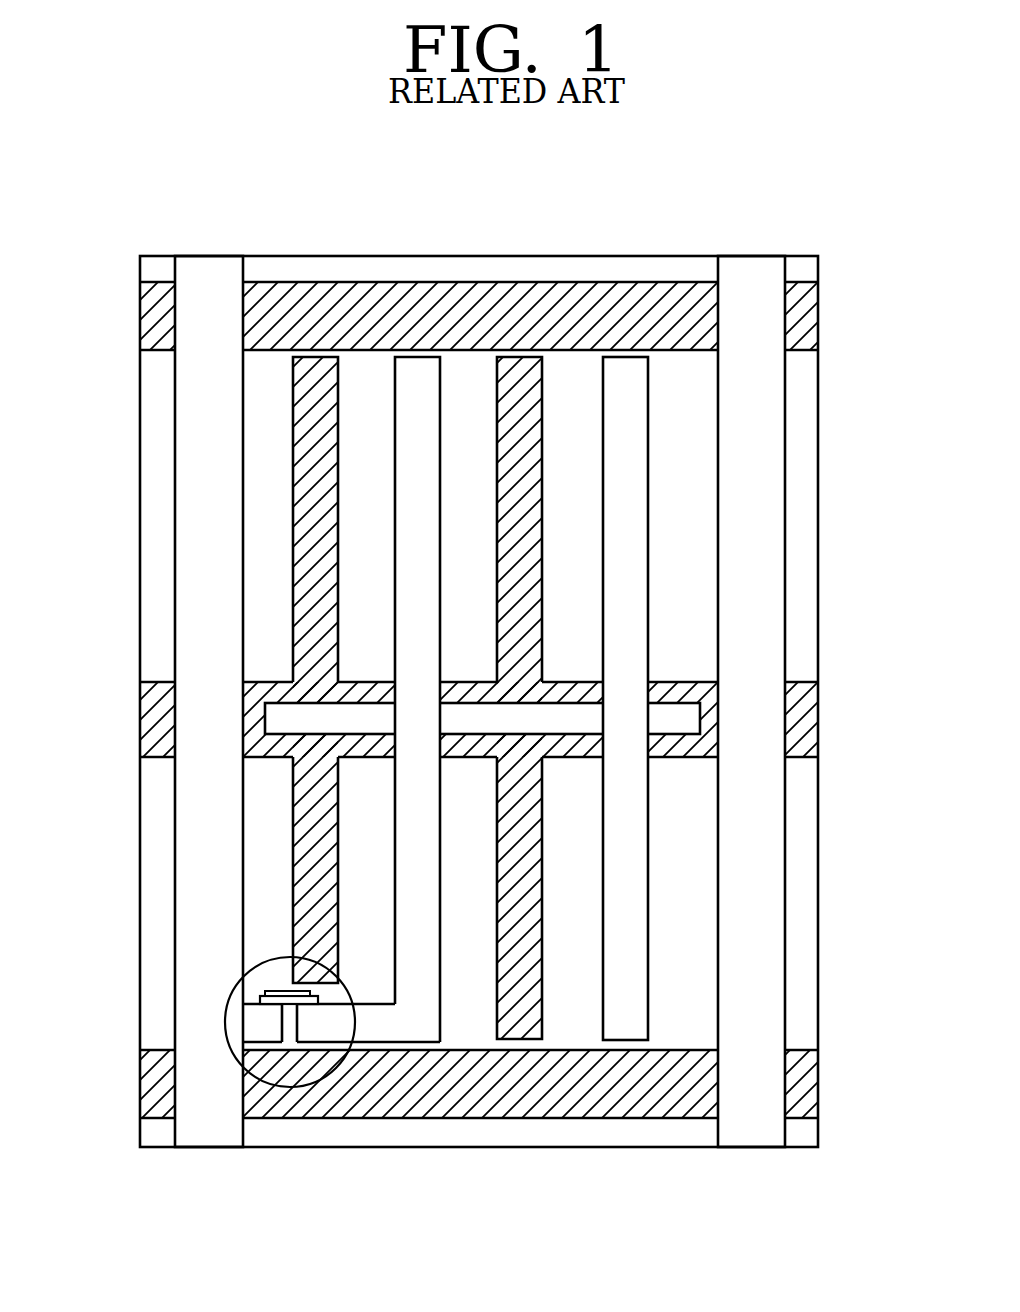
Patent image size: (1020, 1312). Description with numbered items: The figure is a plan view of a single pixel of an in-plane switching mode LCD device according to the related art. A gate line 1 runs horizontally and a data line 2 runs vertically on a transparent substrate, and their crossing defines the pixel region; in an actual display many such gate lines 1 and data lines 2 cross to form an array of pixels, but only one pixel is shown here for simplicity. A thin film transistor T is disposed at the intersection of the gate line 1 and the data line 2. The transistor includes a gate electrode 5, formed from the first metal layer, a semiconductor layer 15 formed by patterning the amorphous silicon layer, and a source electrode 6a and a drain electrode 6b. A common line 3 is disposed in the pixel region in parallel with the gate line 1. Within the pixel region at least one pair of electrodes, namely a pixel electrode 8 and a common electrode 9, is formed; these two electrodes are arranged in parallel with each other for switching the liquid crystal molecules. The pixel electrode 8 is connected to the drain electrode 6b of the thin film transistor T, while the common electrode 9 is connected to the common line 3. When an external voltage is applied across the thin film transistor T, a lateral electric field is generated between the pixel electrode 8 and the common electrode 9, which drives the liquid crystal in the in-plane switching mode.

The gate line 1 is at (813, 1088).
The data line 2 is at (755, 1130).
The common line 3 is at (818, 719).
The gate electrode 5 is at (290, 1044).
The source electrode 6a is at (272, 1033).
The drain electrode 6b is at (307, 1033).
The pixel electrode 8 is at (630, 1020).
The common electrode 9 is at (520, 1020).
The semiconductor layer 15 is at (258, 994).
The thin film transistor T is at (310, 1042).